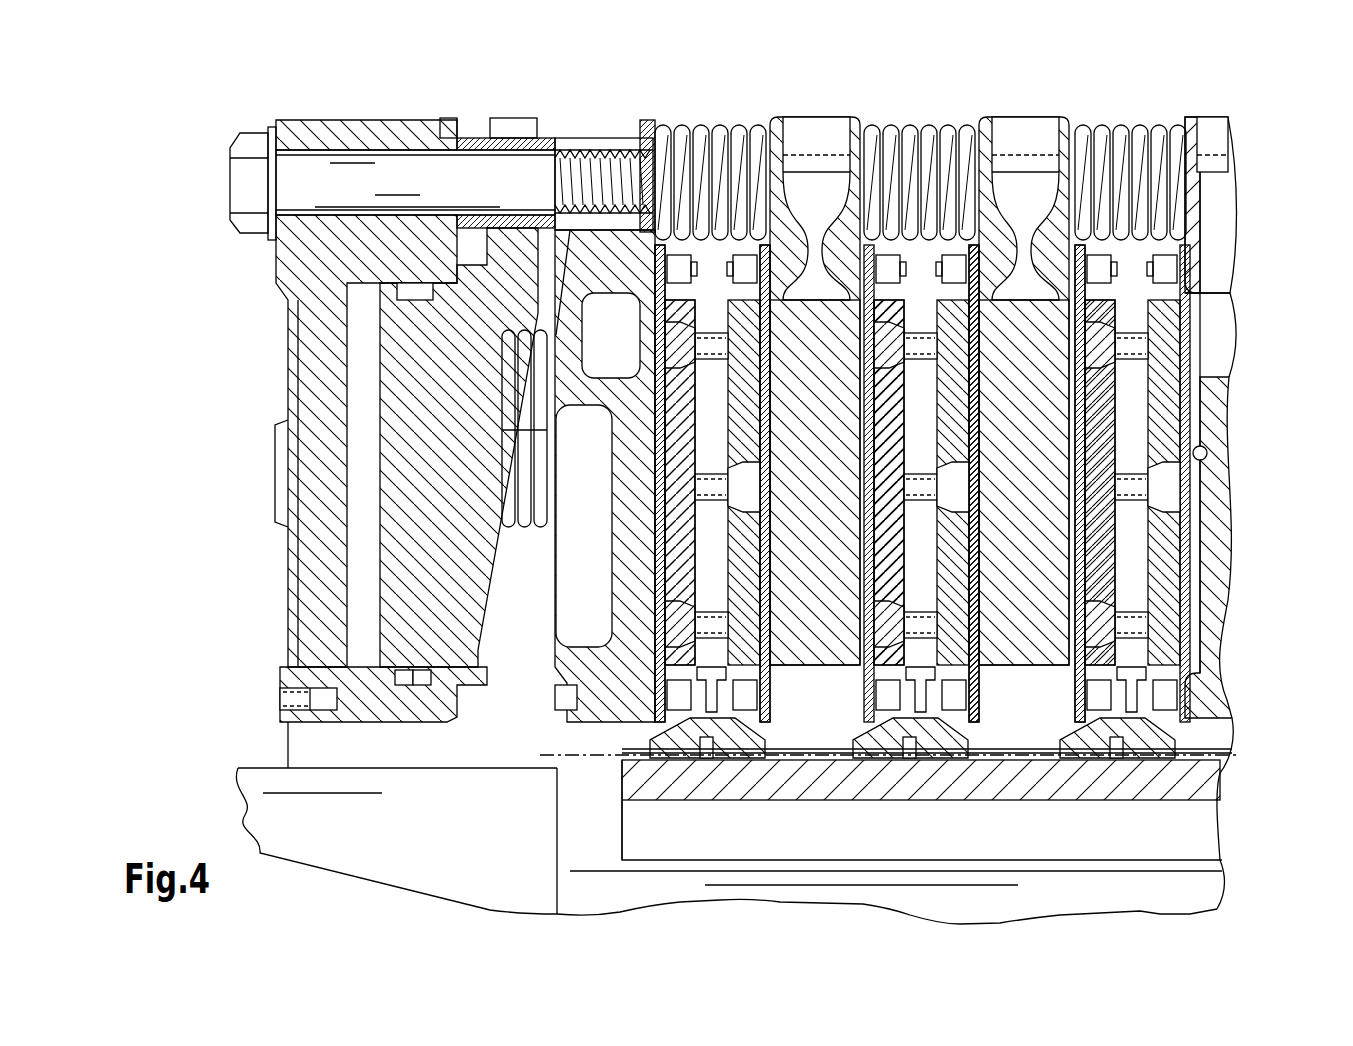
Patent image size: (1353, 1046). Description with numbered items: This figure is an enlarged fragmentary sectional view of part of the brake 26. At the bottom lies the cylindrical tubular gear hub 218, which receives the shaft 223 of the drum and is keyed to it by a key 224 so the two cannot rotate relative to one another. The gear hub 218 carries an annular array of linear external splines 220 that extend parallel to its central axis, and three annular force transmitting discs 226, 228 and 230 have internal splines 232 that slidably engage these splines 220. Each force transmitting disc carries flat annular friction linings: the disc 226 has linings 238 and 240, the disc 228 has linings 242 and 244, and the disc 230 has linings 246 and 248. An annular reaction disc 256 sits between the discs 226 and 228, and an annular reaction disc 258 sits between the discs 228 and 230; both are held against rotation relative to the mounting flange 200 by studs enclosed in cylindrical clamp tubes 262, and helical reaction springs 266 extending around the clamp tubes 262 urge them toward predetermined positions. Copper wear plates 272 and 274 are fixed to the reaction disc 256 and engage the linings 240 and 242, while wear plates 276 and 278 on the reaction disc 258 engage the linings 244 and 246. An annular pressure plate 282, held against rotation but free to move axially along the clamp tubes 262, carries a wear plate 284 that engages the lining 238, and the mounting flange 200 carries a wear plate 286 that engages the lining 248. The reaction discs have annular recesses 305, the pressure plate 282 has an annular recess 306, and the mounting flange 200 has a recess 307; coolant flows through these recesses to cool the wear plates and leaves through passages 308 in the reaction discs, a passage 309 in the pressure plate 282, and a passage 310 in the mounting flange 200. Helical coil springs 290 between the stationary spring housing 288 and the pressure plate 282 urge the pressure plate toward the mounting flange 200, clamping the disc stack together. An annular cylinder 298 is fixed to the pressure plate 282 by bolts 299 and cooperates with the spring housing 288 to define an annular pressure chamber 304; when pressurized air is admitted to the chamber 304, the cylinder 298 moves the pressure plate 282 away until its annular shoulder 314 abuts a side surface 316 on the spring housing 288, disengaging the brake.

The brake 26 is at (292, 97).
The bolts 299 is at (345, 187).
The side surface 316 is at (552, 138).
The friction lining 238 is at (647, 308).
The passage 309 is at (622, 130).
The reaction springs 266 is at (682, 133).
The clamp tubes 262 is at (737, 127).
The friction lining 240 is at (797, 225).
The passages 308 is at (838, 130).
The friction lining 242 is at (817, 135).
The force transmitting disc 228 is at (952, 140).
The friction lining 244 is at (1000, 135).
The friction lining 246 is at (1038, 150).
The force transmitting disc 230 is at (1143, 133).
The passage 310 is at (1213, 133).
The friction lining 248 is at (1178, 320).
The cylinder 298 is at (315, 318).
The spring housing 288 is at (430, 368).
The annular recesses 305 is at (853, 400).
The wear plate 286 is at (1183, 405).
The recess 307 is at (1205, 455).
The wear plate 276 is at (975, 540).
The wear plate 278 is at (1080, 563).
The reaction disc 258 is at (1035, 592).
The mounting flange 200 is at (1210, 690).
The external splines 220 is at (1185, 750).
The internal splines 232 is at (683, 753).
The key 224 is at (1200, 838).
The annular recess 306 is at (640, 470).
The pressure chamber 304 is at (370, 572).
The coil springs 290 is at (520, 507).
The wear plate 284 is at (660, 588).
The annular shoulder 314 is at (550, 662).
The pressure plate 282 is at (650, 665).
The force transmitting disc 226 is at (617, 650).
The wear plate 272 is at (757, 718).
The gear hub 218 is at (785, 780).
The reaction disc 256 is at (810, 667).
The wear plate 274 is at (855, 640).
The shaft 223 is at (410, 850).